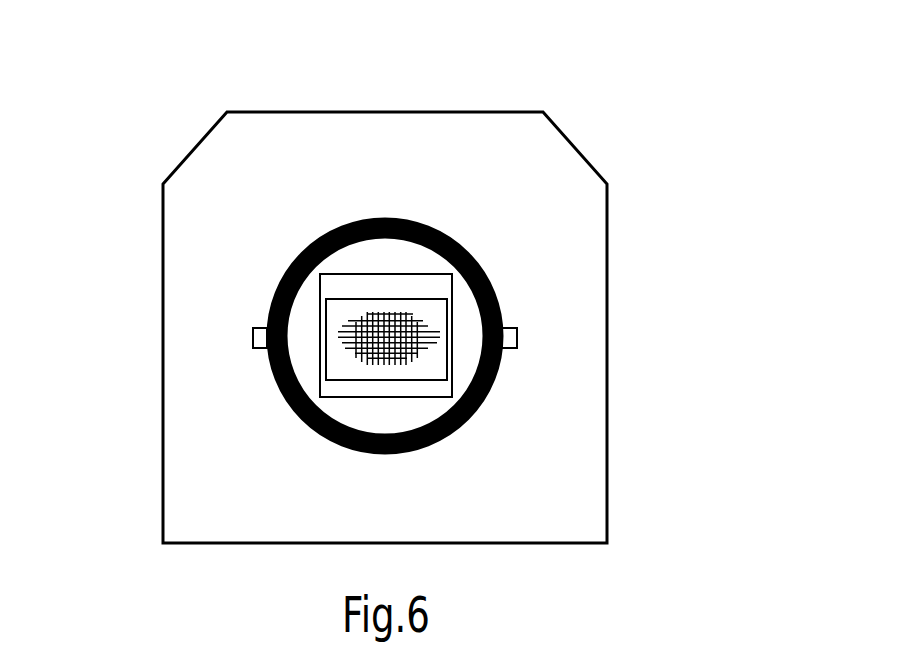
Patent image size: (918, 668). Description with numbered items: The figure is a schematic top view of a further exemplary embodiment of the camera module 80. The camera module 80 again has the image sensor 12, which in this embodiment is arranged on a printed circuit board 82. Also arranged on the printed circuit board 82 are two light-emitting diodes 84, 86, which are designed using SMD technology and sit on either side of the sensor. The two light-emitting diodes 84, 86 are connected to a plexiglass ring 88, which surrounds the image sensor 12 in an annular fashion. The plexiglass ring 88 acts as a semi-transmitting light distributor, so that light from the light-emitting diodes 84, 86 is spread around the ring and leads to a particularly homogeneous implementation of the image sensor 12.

The camera module 80 is at (640, 165).
The printed circuit board 82 is at (583, 403).
The light-emitting diode 84 is at (253, 338).
The light-emitting diode 86 is at (517, 336).
The plexiglass ring 88 is at (495, 290).
The image sensor 12 is at (343, 367).